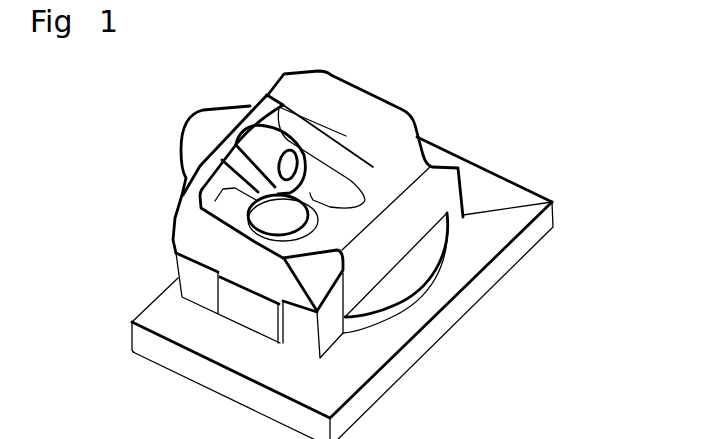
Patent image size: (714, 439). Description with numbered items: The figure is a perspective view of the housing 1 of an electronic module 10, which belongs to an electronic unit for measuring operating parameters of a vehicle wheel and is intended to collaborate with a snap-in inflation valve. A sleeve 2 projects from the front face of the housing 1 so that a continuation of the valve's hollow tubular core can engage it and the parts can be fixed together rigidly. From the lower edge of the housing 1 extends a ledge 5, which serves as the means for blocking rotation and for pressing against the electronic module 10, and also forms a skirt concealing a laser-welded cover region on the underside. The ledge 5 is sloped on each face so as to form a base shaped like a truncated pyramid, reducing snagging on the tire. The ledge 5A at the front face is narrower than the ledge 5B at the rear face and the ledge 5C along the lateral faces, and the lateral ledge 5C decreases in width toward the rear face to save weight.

The housing 1 is at (322, 103).
The sleeve 2 is at (200, 150).
The ledge 5 is at (357, 362).
The ledge extending from the front face 5A is at (172, 282).
The ledge extending from the rear face 5B is at (490, 240).
The ledge extending laterally from the lateral faces 5C is at (493, 193).
The electronic module 10 is at (452, 105).